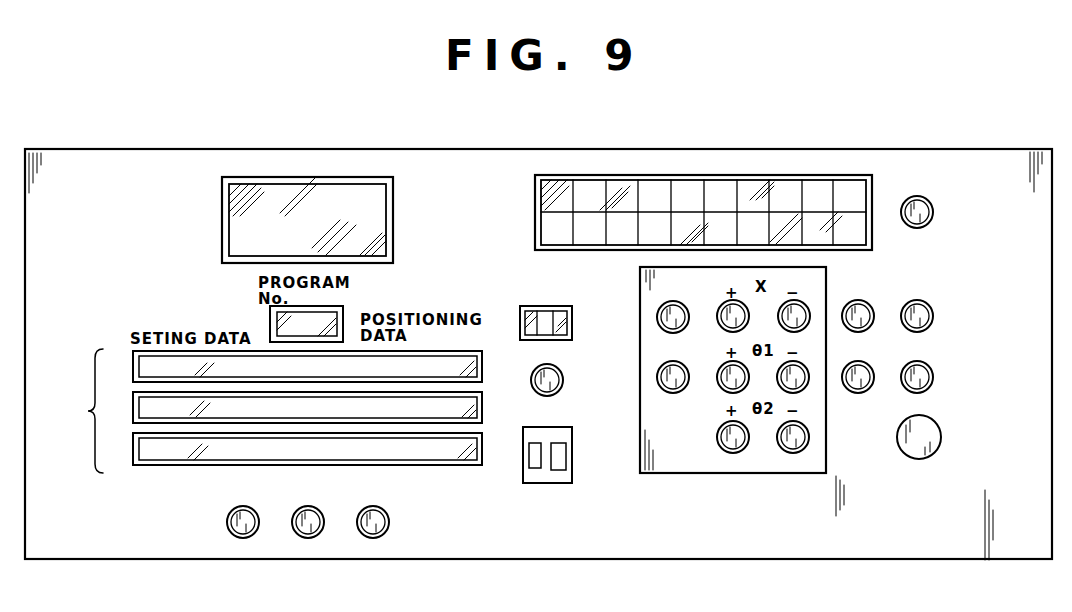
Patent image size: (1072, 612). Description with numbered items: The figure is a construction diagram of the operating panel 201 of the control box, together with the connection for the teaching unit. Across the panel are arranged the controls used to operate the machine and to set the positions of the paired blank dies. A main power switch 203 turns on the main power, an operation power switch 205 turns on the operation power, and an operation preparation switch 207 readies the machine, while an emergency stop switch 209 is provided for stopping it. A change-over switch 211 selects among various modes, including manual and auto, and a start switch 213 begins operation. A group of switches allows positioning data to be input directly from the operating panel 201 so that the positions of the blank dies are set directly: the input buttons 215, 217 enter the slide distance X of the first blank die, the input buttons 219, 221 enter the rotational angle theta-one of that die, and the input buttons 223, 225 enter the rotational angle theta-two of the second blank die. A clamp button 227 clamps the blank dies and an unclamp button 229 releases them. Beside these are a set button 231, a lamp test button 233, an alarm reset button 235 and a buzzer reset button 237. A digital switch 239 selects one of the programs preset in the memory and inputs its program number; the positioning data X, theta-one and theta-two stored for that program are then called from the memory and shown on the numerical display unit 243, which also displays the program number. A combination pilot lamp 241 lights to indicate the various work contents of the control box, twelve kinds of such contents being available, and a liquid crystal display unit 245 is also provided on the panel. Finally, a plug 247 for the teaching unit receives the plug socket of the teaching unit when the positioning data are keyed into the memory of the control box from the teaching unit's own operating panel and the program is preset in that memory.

The operating panel 201 is at (901, 144).
The main power switch 203 is at (933, 215).
The operation power switch 205 is at (934, 319).
The operation preparation switch 207 is at (934, 378).
The emergency stop switch 209 is at (942, 437).
The change-over switch 211 is at (871, 323).
The start switch 213 is at (861, 393).
The input button for slide distance X 215 is at (716, 307).
The input button for slide distance X 217 is at (806, 309).
The input button for rotational angle θ1 219 is at (726, 390).
The input button for rotational angle θ1 221 is at (801, 389).
The input button for rotational angle θ2 223 is at (735, 453).
The input button for rotational angle θ2 225 is at (793, 453).
The clamp button 227 is at (658, 322).
The unclamp button 229 is at (657, 379).
The set button 231 is at (531, 384).
The lamp test button 233 is at (372, 538).
The alarm reset button 235 is at (306, 538).
The buzzer reset button 237 is at (242, 538).
The digital switch 239 is at (521, 322).
The combination pilot lamp 241 is at (695, 178).
The numerical display unit 243 is at (259, 411).
The liquid crystal display unit 245 is at (284, 190).
The plug for the teaching unit 247 is at (551, 484).